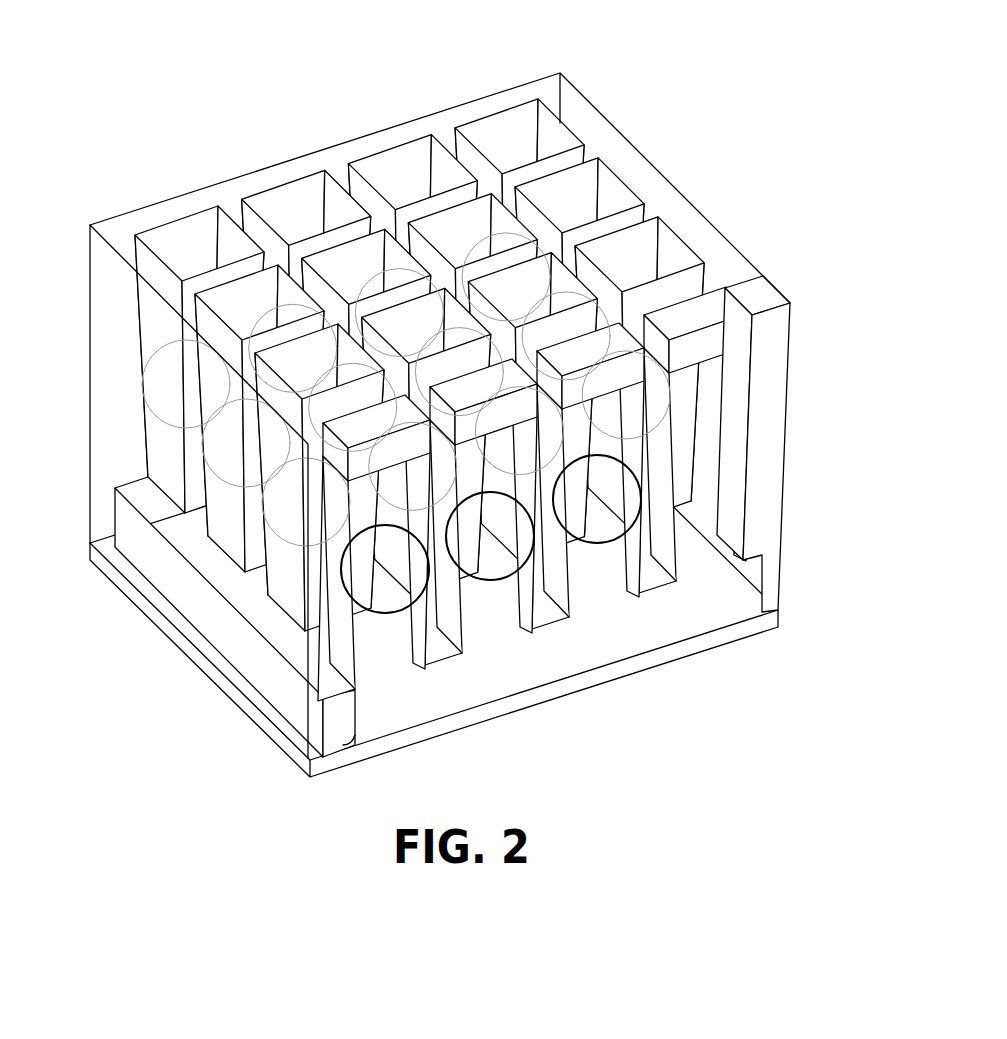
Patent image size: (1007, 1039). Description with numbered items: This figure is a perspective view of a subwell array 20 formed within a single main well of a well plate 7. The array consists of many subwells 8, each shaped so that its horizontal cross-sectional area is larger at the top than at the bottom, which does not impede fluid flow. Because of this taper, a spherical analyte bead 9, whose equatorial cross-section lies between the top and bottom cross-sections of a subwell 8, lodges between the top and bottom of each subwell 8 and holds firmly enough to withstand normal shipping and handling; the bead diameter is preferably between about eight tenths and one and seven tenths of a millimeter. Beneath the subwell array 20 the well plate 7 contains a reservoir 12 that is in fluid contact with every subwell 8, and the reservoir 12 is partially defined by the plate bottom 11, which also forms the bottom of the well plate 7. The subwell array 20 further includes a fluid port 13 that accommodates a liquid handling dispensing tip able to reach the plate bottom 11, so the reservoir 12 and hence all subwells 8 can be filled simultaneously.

The subwell array 20 is at (352, 72).
The well plate 7 is at (122, 378).
The subwell 8 is at (577, 430).
The analyte bead 9 is at (593, 525).
The plate bottom 11 is at (668, 655).
The reservoir 12 is at (347, 722).
The fluid port 13 is at (712, 345).